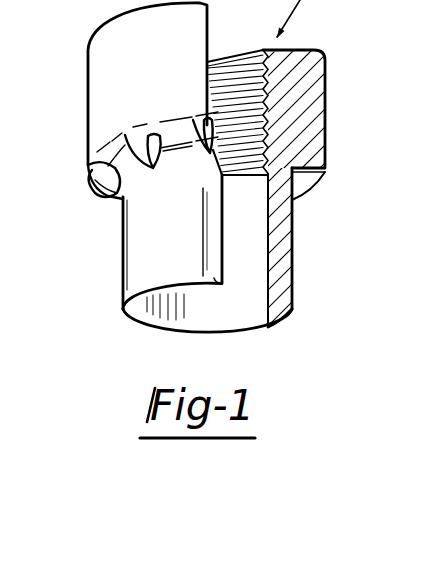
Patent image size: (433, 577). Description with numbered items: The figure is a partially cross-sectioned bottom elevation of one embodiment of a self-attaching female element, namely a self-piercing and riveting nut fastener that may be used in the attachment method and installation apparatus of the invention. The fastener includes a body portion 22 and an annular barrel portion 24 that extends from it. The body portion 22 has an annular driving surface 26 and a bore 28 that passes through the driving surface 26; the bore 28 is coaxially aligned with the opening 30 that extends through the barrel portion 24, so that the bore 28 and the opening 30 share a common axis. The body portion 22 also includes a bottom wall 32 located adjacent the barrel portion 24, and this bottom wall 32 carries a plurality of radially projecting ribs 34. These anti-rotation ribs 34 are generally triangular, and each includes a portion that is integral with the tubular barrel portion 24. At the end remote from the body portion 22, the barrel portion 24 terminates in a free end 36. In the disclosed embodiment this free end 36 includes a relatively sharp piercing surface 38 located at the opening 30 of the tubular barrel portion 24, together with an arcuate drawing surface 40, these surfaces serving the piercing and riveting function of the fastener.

The body portion 22 is at (117, 75).
The annular barrel portion 24 is at (142, 233).
The annular driving surface 26 is at (303, 50).
The bore 28 is at (231, 77).
The opening 30 is at (258, 233).
The bottom wall 32 is at (95, 163).
The radially projecting ribs 34 is at (100, 200).
The free end 36 is at (140, 317).
The piercing surface 38 is at (273, 322).
The arcuate drawing surface 40 is at (290, 305).